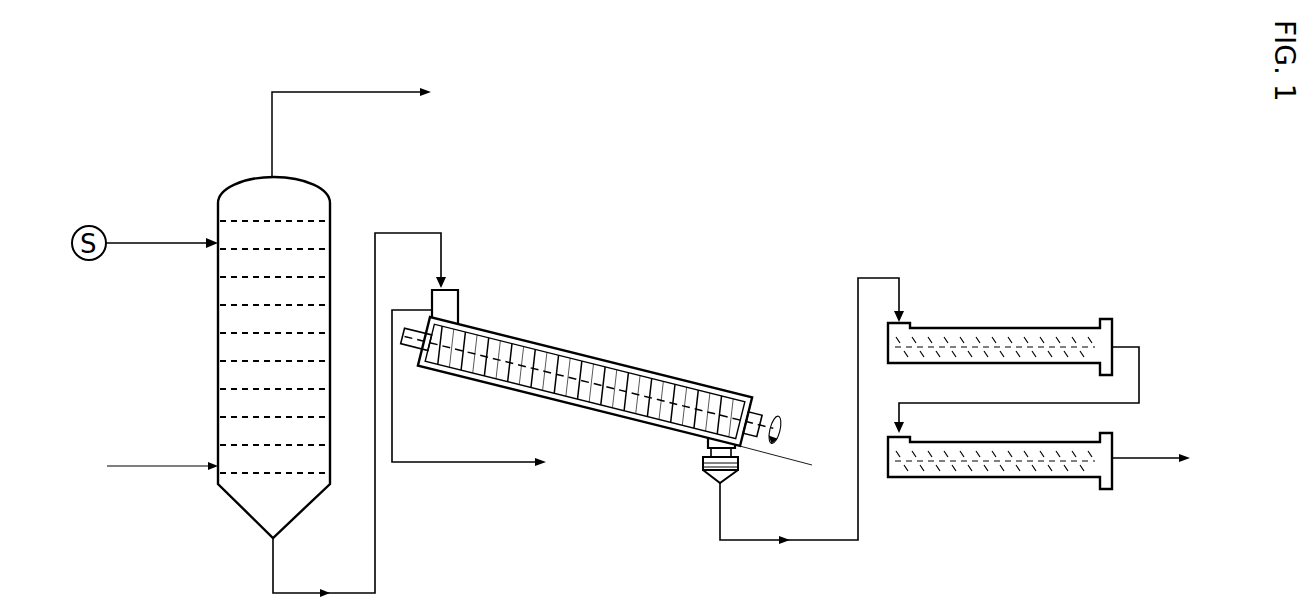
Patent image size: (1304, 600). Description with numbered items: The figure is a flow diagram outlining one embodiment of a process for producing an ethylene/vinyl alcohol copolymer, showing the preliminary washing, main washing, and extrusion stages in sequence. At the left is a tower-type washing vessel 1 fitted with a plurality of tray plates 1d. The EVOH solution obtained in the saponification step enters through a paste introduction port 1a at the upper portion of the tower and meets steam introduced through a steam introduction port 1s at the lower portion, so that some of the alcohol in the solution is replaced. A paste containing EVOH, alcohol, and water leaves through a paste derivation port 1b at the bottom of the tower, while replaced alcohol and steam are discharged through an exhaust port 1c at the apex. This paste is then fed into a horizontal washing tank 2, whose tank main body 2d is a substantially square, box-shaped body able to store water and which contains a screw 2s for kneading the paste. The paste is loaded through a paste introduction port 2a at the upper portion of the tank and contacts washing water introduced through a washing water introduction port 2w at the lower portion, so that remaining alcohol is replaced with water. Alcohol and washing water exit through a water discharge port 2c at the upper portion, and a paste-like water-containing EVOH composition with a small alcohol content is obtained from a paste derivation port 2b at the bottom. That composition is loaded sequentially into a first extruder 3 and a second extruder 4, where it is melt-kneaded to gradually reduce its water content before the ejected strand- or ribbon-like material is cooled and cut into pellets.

The washing vessel 1 is at (338, 190).
The paste introduction port 1a is at (162, 257).
The paste derivation port 1b is at (359, 415).
The exhaust port 1c is at (351, 132).
The tray plate 1d is at (235, 417).
The steam introduction port 1s is at (162, 453).
The horizontal washing tank 2 is at (582, 342).
The paste introduction port 2a is at (453, 289).
The paste derivation port 2b is at (710, 454).
The water discharge port 2c is at (469, 378).
The tank main body 2d is at (512, 338).
The screw 2s is at (663, 384).
The washing water introduction port 2w is at (746, 452).
The first extruder 3 is at (997, 357).
The second extruder 4 is at (997, 470).